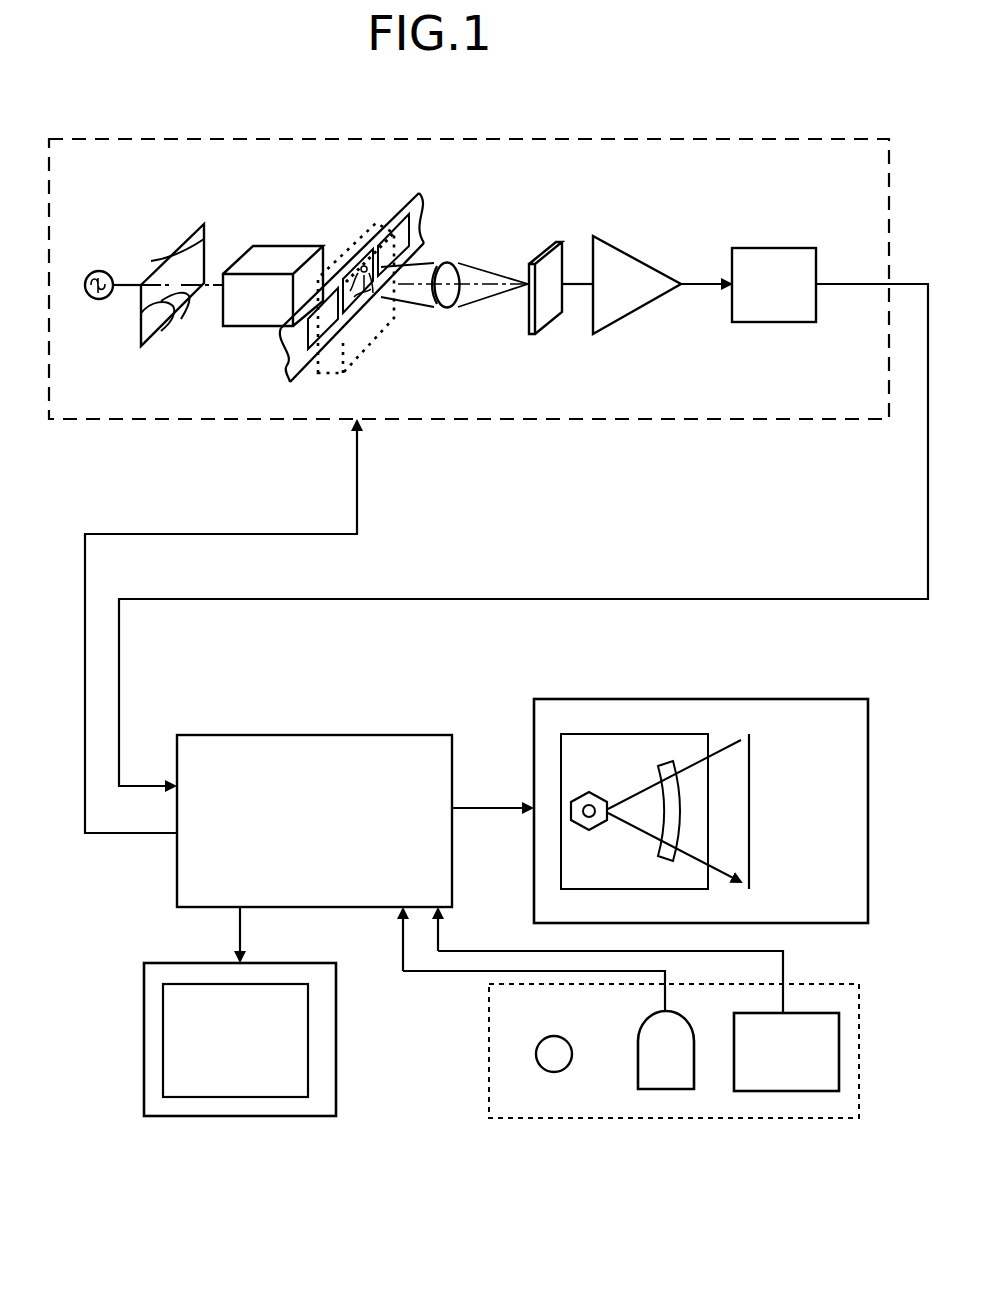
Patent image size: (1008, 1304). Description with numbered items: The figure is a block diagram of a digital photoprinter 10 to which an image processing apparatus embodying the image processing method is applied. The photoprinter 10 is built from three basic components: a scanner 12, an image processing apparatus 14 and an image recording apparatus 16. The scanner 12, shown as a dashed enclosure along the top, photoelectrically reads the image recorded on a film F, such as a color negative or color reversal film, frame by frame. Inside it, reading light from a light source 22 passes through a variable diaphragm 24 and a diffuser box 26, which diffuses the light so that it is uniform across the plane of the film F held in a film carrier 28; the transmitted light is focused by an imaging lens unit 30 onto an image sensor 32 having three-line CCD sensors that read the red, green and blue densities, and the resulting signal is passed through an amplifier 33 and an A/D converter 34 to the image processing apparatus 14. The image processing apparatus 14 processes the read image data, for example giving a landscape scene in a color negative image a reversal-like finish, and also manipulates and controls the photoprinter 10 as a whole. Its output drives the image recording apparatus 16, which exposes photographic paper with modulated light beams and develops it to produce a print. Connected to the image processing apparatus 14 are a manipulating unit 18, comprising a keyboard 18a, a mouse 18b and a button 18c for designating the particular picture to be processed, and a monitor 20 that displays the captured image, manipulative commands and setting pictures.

The digital photoprinter 10 is at (570, 128).
The scanner 12 is at (740, 136).
The image processing apparatus 14 is at (310, 733).
The image recording apparatus 16 is at (693, 697).
The manipulating unit 18 is at (631, 1065).
The keyboard 18a is at (785, 1092).
The mouse 18b is at (660, 1090).
The button 18c is at (552, 1073).
The monitor 20 is at (227, 1117).
The light source 22 is at (98, 269).
The variable diaphragm 24 is at (173, 250).
The diffuser box 26 is at (263, 260).
The film carrier 28 is at (373, 327).
The imaging lens unit 30 is at (445, 260).
The image sensor 32 is at (543, 250).
The amplifier 33 is at (636, 308).
The A/D converter 34 is at (788, 323).
The film F is at (397, 212).